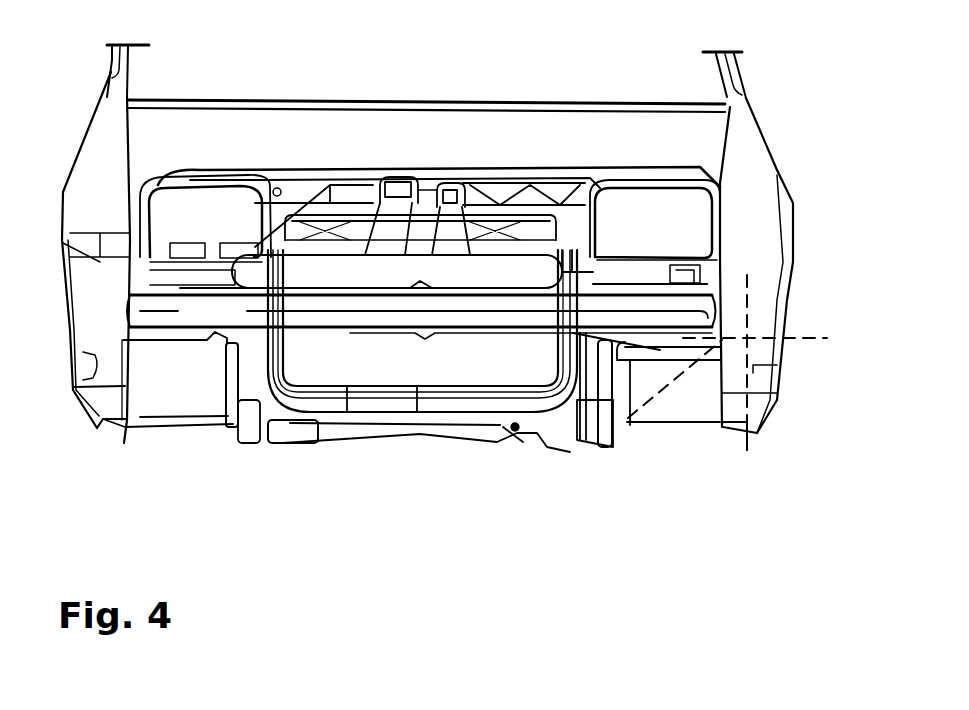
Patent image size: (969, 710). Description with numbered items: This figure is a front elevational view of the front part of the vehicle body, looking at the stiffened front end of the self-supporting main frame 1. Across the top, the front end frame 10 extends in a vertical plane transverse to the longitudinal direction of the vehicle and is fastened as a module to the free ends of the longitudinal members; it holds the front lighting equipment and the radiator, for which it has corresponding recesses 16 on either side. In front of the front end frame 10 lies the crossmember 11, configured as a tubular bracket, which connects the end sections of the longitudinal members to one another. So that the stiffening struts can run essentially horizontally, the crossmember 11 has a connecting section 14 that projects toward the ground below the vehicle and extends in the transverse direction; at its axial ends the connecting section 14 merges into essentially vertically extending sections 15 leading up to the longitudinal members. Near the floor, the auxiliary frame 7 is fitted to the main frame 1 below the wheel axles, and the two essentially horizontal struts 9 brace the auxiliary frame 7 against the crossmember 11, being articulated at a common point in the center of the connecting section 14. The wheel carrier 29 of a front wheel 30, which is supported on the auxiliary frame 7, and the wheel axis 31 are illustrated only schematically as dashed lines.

The main frame 1 is at (745, 150).
The auxiliary frame 7 is at (283, 433).
The struts 9 is at (337, 438).
The front end frame 10 is at (600, 182).
The crossmember 11 is at (513, 440).
The connecting section 14 is at (480, 447).
The vertically extending sections 15 is at (233, 420).
The recesses 16 is at (615, 198).
The wheel carrier 29 is at (647, 430).
The front wheel 30 is at (748, 443).
The wheel axis 31 is at (780, 340).